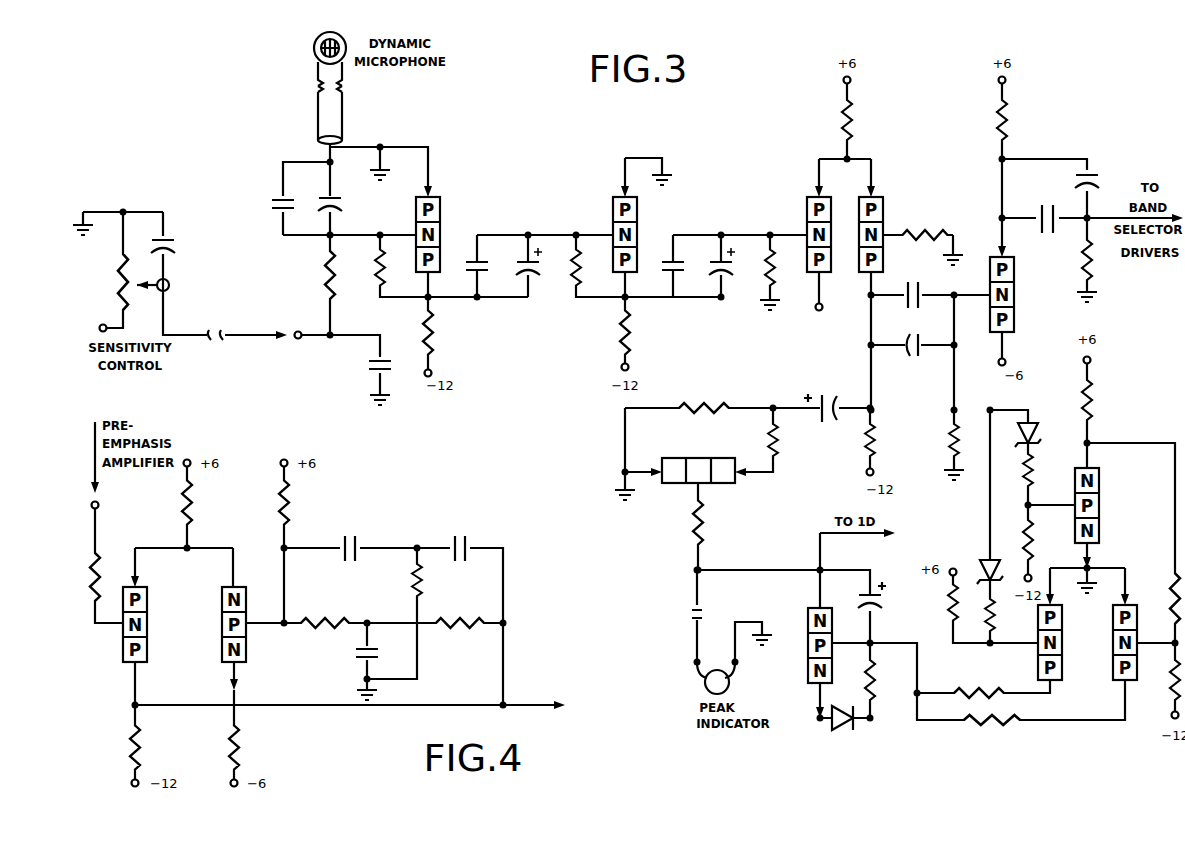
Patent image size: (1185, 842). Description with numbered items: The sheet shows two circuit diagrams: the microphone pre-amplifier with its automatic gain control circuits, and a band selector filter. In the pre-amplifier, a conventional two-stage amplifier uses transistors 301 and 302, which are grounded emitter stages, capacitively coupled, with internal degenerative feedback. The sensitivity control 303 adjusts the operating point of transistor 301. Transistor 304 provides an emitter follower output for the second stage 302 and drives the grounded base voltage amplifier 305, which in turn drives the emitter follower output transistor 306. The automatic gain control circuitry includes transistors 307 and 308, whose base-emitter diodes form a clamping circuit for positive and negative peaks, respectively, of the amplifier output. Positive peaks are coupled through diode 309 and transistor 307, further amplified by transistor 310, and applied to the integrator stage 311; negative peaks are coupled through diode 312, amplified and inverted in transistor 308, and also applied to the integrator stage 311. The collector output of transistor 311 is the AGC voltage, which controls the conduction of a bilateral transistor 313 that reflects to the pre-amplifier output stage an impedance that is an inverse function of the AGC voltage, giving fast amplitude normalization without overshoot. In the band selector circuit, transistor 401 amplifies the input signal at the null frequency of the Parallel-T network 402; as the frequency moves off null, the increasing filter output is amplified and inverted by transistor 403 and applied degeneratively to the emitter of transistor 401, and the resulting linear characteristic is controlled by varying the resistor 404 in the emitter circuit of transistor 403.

In FIG. 3, the transistor 301 is at (440, 207).
In FIG. 3, the transistor 302 is at (612, 206).
In FIG. 3, the sensitivity control 303 is at (134, 316).
In FIG. 3, the transistor 304 is at (807, 206).
In FIG. 3, the grounded base voltage amplifier 305 is at (883, 206).
In FIG. 3, the emitter follower output transistor 306 is at (1013, 300).
In FIG. 3, the transistor 307 is at (1100, 526).
In FIG. 3, the transistor 308 is at (1063, 637).
In FIG. 3, the diode 309 is at (1039, 426).
In FIG. 3, the transistor 310 is at (1113, 662).
In FIG. 3, the integrator stage 311 is at (808, 618).
In FIG. 3, the diode 312 is at (978, 565).
In FIG. 3, the bilateral transistor 313 is at (696, 460).
In FIG. 4, the transistor 401 is at (148, 596).
In FIG. 4, the Parallel-T network 402 is at (377, 593).
In FIG. 4, the transistor 403 is at (222, 596).
In FIG. 4, the resistor 404 is at (242, 750).